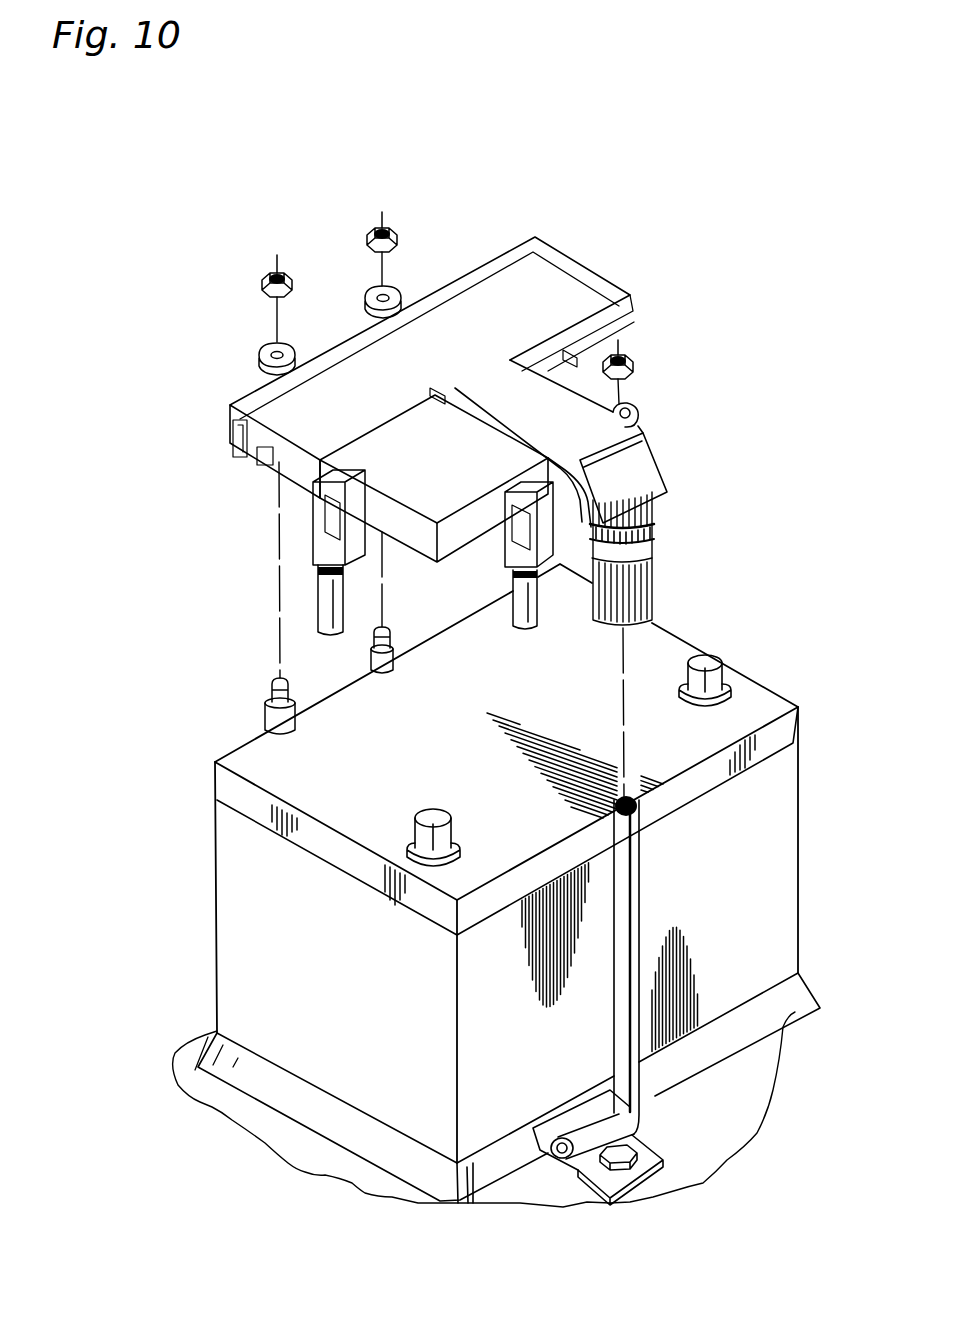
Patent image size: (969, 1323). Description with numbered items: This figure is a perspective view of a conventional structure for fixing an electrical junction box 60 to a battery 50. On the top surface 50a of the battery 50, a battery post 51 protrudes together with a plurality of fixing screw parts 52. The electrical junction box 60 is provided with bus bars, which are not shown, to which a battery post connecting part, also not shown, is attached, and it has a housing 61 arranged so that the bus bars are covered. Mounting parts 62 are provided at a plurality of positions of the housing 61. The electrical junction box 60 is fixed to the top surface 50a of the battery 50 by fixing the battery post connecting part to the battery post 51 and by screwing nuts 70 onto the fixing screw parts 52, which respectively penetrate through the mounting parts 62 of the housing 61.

The battery 50 is at (216, 920).
The top surface 50a is at (683, 730).
The battery post 51 is at (410, 838).
The fixing screw parts 52 is at (263, 718).
The electrical junction box 60 is at (420, 482).
The housing 61 is at (566, 290).
The mounting parts 62 is at (374, 291).
The nuts 70 is at (379, 226).